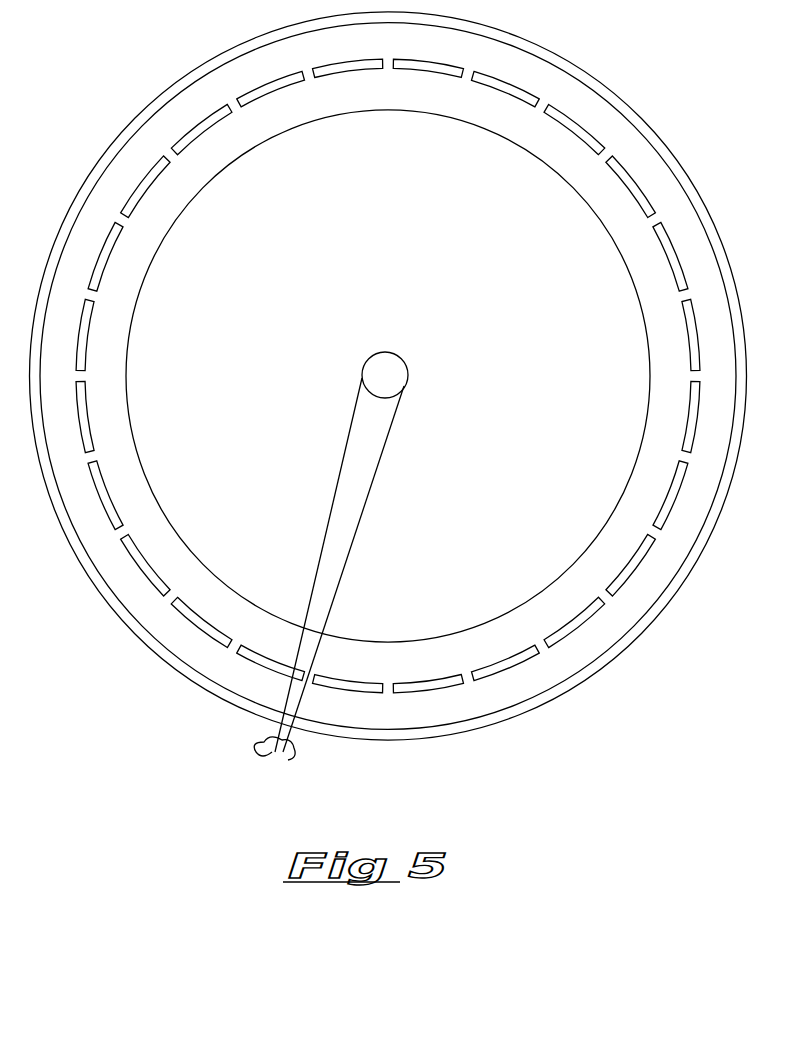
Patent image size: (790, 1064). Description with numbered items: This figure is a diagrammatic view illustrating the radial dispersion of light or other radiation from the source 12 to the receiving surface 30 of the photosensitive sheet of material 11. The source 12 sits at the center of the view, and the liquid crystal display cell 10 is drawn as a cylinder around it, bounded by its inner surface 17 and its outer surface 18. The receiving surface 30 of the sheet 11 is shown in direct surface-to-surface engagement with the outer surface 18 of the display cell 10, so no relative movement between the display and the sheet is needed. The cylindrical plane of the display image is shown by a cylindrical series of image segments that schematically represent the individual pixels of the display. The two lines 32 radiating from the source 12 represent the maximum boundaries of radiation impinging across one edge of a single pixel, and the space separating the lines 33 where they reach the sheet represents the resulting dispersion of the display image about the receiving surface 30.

The liquid crystal display cell 10 is at (396, 376).
The photosensitive sheet 11 is at (627, 638).
The source 12 is at (398, 352).
The inner surface 17 is at (603, 228).
The outer surface 18 is at (657, 138).
The receiving surface 30 is at (402, 383).
The lines 32 is at (348, 427).
The lines 33 is at (274, 758).